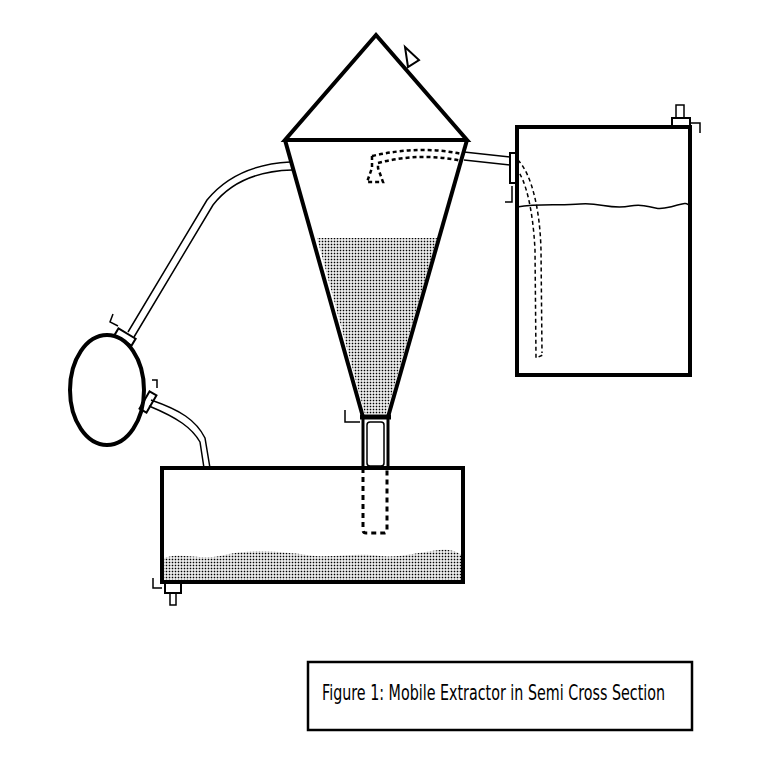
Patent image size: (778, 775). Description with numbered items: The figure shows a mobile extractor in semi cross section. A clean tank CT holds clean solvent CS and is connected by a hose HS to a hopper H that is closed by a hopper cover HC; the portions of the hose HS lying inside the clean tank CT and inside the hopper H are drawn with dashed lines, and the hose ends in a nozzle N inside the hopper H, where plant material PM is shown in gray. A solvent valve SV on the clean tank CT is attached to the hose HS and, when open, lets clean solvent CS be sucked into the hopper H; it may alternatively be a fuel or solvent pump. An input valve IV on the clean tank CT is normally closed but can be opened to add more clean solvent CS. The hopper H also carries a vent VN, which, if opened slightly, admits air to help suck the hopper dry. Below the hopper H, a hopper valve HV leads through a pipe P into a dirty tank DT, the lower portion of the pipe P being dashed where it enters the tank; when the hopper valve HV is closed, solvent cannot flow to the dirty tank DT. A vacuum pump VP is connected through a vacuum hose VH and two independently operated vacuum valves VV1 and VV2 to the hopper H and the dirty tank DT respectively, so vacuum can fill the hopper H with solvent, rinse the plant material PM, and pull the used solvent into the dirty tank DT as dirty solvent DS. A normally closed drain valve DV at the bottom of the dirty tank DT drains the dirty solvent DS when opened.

The nozzle N is at (370, 167).
The vent VN is at (417, 52).
The hopper cover HC is at (313, 102).
The hopper H is at (298, 200).
The plant material PM is at (403, 315).
The hose HS is at (425, 160).
The solvent valve SV is at (511, 153).
The clean tank CT is at (598, 377).
The clean solvent CS is at (577, 205).
The input valve IV is at (672, 118).
The vacuum pump VP is at (107, 390).
The vacuum valve 1 VV1 is at (122, 328).
The vacuum valve 2 VV2 is at (154, 398).
The vacuum hose VH is at (178, 255).
The hopper valve HV is at (390, 425).
The pipe P is at (363, 505).
The dirty tank DT is at (160, 505).
The dirty solvent DS is at (453, 550).
The drain valve DV is at (165, 597).